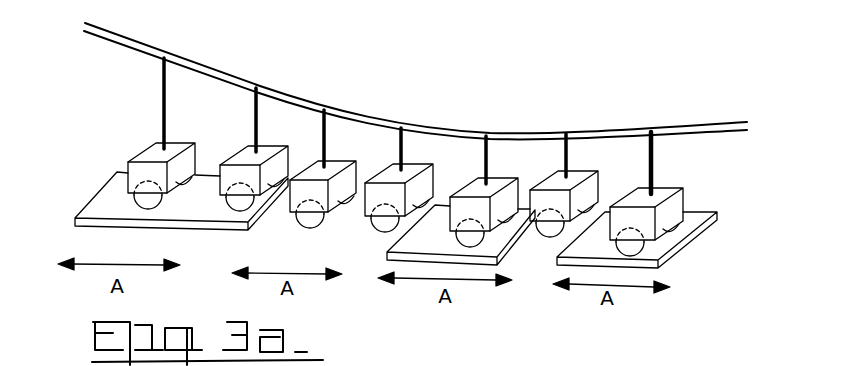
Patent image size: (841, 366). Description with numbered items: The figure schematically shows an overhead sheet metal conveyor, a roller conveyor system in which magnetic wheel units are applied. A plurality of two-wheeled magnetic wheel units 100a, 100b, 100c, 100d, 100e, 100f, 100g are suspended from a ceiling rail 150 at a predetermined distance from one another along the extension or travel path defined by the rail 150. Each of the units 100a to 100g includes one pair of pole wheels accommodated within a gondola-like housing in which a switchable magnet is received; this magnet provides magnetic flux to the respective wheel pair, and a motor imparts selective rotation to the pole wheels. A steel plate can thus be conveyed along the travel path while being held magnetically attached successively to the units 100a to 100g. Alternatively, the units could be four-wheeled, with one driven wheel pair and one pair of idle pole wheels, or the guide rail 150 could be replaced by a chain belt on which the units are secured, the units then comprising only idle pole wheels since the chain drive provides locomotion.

The ceiling rail 150 is at (150, 45).
The magnetic wheel unit 100a is at (133, 137).
The magnetic wheel unit 100b is at (233, 147).
The magnetic wheel unit 100c is at (345, 150).
The magnetic wheel unit 100d is at (440, 153).
The magnetic wheel unit 100e is at (515, 168).
The magnetic wheel unit 100f is at (605, 163).
The magnetic wheel unit 100g is at (687, 178).